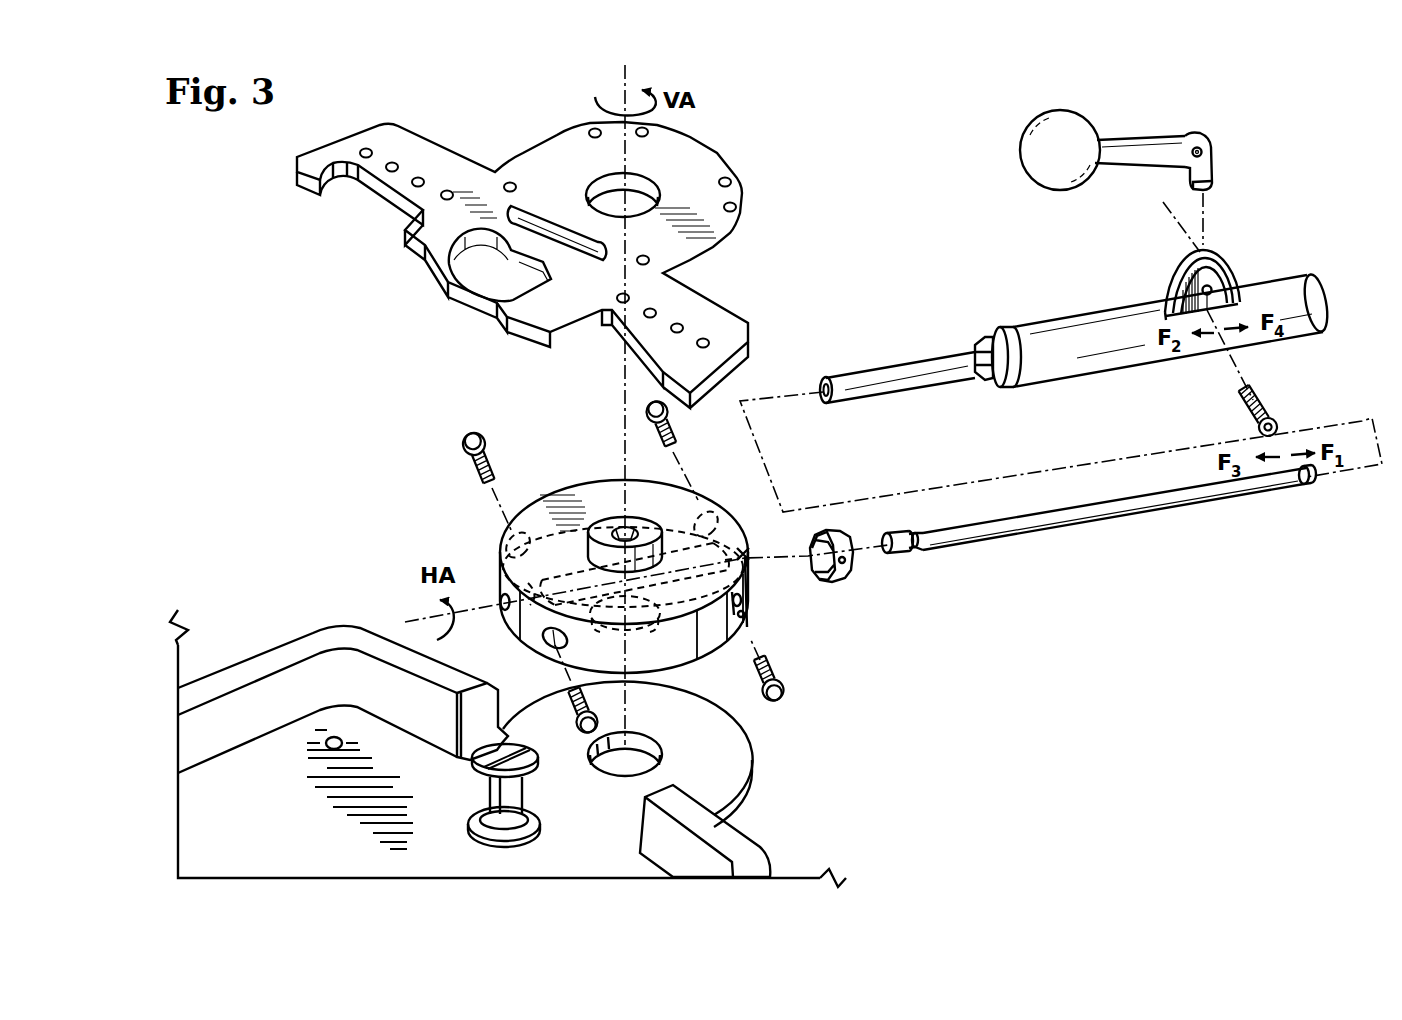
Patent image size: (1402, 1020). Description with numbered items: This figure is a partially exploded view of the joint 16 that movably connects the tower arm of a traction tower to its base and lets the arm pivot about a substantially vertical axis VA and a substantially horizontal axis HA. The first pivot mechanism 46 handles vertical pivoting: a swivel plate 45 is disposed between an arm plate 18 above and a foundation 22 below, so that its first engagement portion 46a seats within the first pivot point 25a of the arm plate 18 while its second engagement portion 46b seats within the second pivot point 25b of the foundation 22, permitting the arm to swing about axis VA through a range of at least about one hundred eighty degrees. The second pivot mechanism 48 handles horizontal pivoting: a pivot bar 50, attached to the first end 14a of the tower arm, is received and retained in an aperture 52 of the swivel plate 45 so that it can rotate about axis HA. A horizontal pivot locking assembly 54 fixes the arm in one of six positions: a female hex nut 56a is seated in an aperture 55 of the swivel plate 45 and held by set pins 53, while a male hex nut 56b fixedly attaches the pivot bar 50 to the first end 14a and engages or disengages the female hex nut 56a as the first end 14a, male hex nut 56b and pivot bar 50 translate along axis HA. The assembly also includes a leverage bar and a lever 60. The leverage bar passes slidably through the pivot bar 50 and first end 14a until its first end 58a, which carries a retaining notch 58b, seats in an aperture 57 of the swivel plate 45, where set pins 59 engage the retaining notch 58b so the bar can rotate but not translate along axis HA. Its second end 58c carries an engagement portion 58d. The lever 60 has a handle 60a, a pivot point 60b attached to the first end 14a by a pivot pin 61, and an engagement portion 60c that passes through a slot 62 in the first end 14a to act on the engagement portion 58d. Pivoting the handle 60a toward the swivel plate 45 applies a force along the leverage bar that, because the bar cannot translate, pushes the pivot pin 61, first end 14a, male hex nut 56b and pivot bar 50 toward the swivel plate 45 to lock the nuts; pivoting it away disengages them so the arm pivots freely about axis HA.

The first end 14a is at (1259, 282).
The joint 16 is at (881, 704).
The arm plate 18 is at (450, 150).
The foundation 22 is at (753, 760).
The first pivot point 25a is at (604, 187).
The second pivot point 25b is at (663, 749).
The swivel plate 45 is at (588, 484).
The first pivot mechanism 46 is at (637, 180).
The first engagement portion 46a is at (667, 540).
The second engagement portion 46b is at (624, 630).
The second pivot mechanism 48 is at (1064, 551).
The pivot bar 50 is at (882, 362).
The aperture 52 is at (573, 573).
The set pins 53 is at (670, 415).
The horizontal pivot locking assembly 54 is at (1104, 321).
The aperture 55 is at (747, 553).
The female hex nut 56a is at (835, 583).
The male hex nut 56b is at (982, 338).
The aperture 57 is at (503, 606).
The first end 58a is at (900, 555).
The retaining notch 58b is at (913, 534).
The second end 58c is at (1189, 554).
The engagement portion 58d is at (1303, 485).
The set pins 59 is at (463, 444).
The lever 60 is at (1112, 152).
The handle 60a is at (1019, 147).
The pivot point 60b is at (1203, 152).
The engagement portion 60c is at (1208, 185).
The pivot pin 61 is at (1275, 418).
The slot 62 is at (1166, 300).